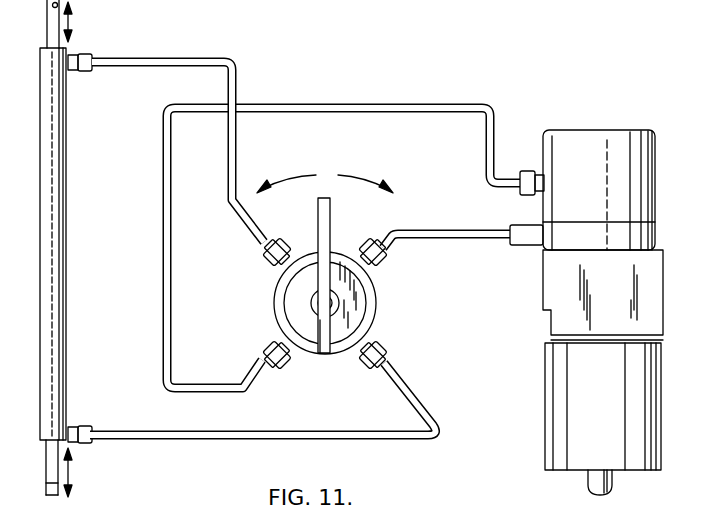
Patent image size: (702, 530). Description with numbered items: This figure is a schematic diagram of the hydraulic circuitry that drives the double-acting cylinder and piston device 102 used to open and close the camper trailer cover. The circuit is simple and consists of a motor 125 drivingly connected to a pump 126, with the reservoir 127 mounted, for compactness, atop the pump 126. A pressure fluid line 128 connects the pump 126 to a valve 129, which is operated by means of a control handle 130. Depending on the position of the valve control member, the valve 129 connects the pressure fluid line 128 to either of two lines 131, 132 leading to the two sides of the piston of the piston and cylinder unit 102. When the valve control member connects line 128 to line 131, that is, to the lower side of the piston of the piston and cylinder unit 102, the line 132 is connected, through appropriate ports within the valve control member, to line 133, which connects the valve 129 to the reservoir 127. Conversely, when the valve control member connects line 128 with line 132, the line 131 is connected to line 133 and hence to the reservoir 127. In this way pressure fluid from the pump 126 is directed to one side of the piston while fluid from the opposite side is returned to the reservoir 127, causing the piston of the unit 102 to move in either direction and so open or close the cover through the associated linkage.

The double-acting cylinder and piston device 102 is at (66, 257).
The motor 125 is at (568, 380).
The pump 126 is at (568, 243).
The reservoir 127 is at (588, 147).
The pressure fluid line 128 is at (458, 230).
The valve 129 is at (366, 301).
The control handle 130 is at (328, 237).
The line 131 is at (275, 430).
The line 132 is at (241, 72).
The line 133 is at (330, 105).